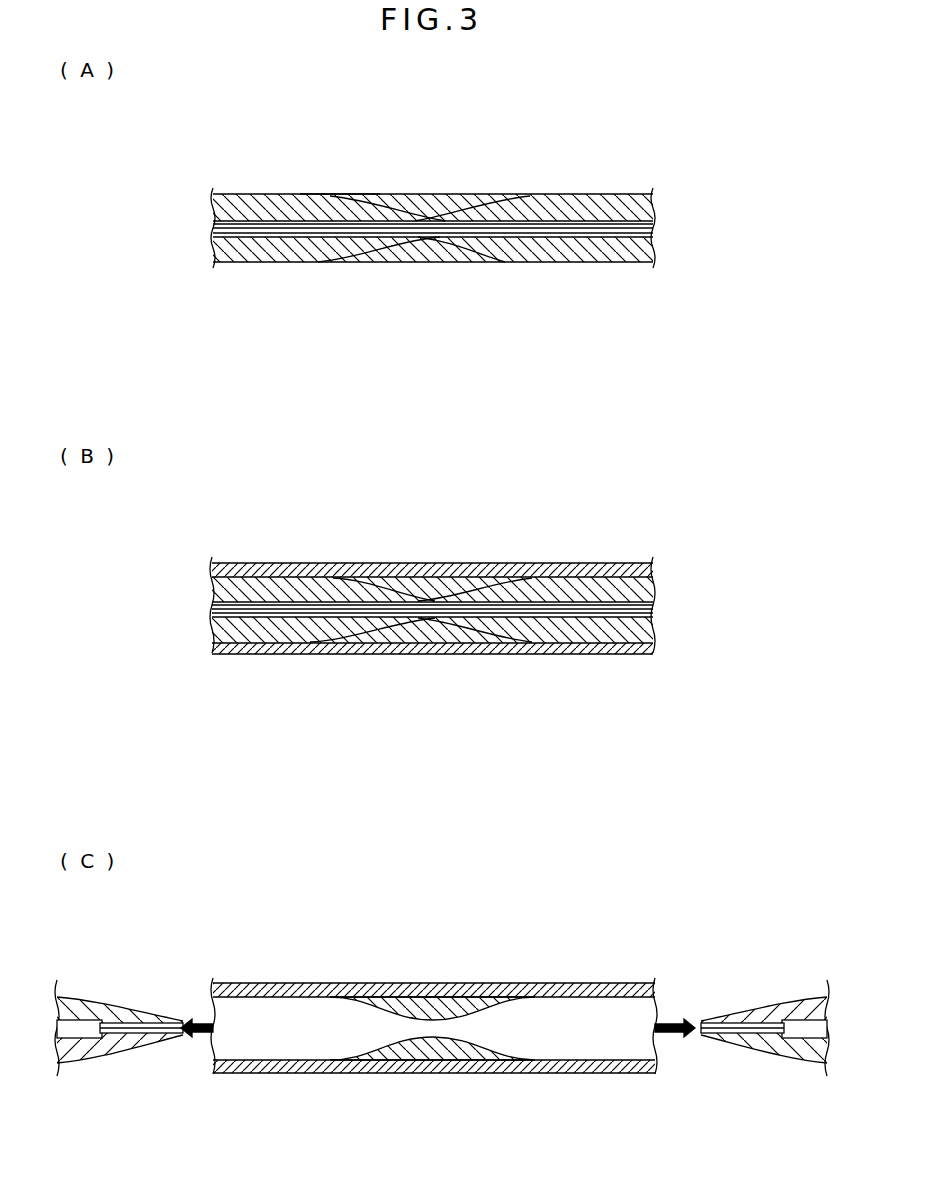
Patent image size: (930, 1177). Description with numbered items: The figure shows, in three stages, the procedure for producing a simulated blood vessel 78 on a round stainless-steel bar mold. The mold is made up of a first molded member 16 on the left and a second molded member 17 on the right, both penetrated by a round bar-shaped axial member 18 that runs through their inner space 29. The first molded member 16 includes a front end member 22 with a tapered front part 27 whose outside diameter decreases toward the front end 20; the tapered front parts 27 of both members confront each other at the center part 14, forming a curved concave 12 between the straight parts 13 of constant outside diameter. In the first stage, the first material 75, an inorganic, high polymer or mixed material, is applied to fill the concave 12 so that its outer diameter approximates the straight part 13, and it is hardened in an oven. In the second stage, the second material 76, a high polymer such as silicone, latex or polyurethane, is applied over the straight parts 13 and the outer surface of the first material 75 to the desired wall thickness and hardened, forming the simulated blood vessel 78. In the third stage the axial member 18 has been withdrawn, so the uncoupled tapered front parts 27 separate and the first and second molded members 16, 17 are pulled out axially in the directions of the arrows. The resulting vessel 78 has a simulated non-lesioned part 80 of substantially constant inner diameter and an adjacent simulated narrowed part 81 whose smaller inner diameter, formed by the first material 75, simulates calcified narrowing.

The concave 12 is at (480, 195).
The straight part 13 is at (228, 194).
The center part 14 is at (432, 233).
The first molded member 16 is at (284, 162).
The second molded member 17 is at (573, 160).
The axial member 18 is at (275, 230).
The front end 20 is at (184, 1018).
The front end member 22 is at (340, 192).
The tapered front part 27 is at (372, 238).
The inner space 29 is at (336, 229).
The first material 75 is at (426, 195).
The second material 76 is at (270, 563).
The simulated blood vessel 78 is at (601, 561).
The simulated non-lesioned part 80 is at (290, 983).
The simulated narrowed part 81 is at (470, 1005).